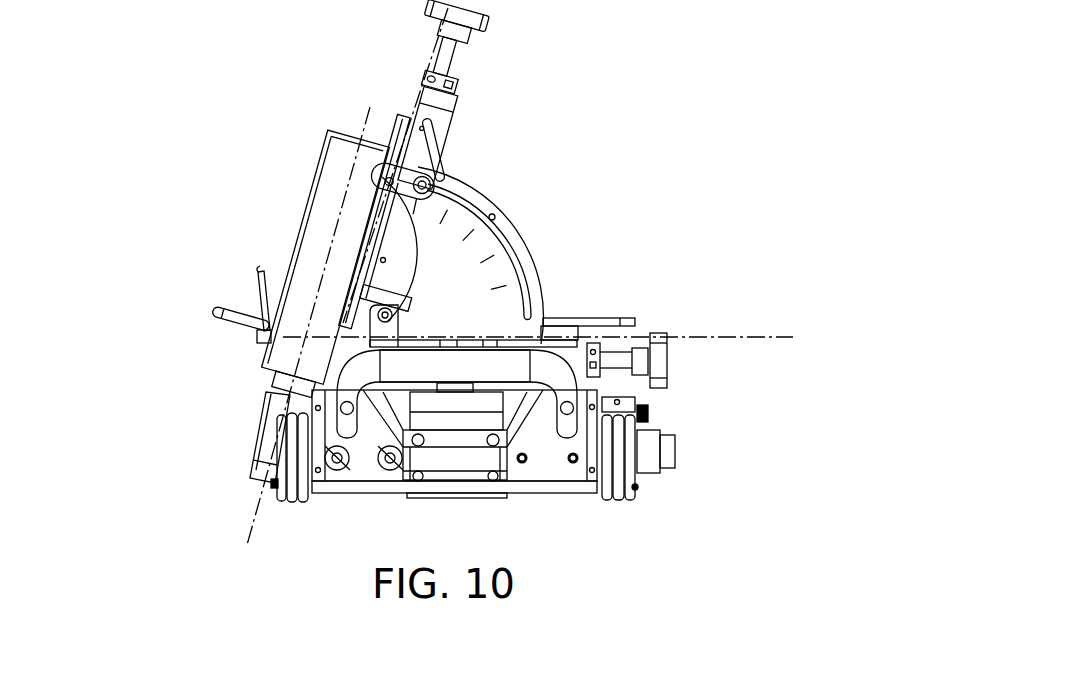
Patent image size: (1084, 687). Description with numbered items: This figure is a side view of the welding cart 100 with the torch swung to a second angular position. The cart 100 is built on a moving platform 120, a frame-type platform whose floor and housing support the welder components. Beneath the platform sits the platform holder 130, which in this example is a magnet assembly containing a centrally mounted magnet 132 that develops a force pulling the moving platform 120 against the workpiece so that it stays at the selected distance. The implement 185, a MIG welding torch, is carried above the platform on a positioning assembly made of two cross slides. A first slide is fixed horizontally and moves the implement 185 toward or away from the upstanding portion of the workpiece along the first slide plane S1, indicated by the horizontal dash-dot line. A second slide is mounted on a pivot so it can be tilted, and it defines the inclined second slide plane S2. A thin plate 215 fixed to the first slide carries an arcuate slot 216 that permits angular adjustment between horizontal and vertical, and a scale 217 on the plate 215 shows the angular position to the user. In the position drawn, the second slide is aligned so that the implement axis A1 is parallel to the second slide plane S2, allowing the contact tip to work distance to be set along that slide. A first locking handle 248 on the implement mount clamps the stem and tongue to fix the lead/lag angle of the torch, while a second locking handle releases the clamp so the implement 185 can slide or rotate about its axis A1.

The cart 100 is at (205, 152).
The moving platform 120 is at (323, 580).
The platform holder 130 is at (465, 447).
The magnet 132 is at (442, 496).
The implement 185 is at (262, 448).
The plate 215 is at (490, 328).
The slot 216 is at (489, 216).
The scale 217 is at (490, 255).
The first locking handle 248 is at (267, 262).
The first slide plane S1 is at (768, 340).
The second slide plane S2 is at (422, 62).
The implement axis A1 is at (365, 123).